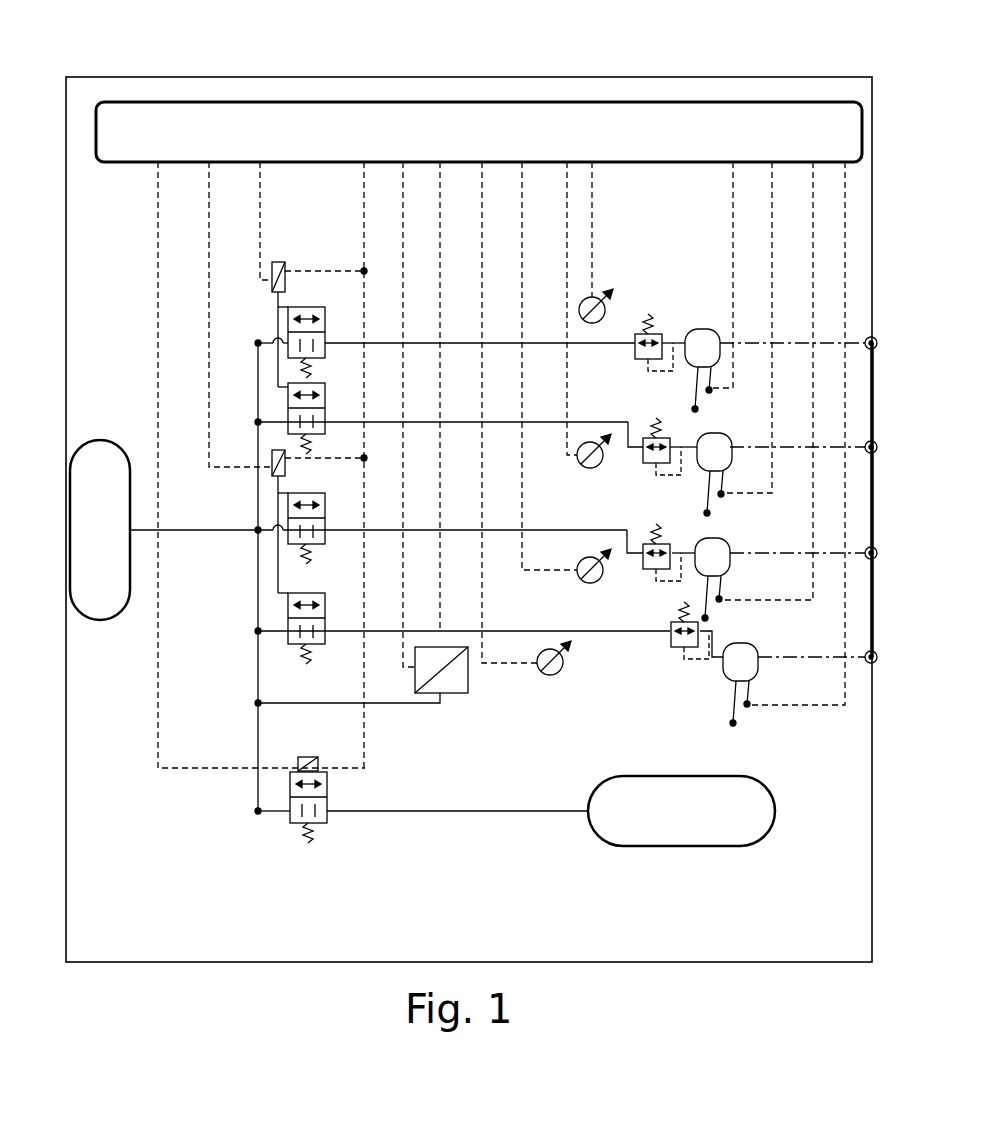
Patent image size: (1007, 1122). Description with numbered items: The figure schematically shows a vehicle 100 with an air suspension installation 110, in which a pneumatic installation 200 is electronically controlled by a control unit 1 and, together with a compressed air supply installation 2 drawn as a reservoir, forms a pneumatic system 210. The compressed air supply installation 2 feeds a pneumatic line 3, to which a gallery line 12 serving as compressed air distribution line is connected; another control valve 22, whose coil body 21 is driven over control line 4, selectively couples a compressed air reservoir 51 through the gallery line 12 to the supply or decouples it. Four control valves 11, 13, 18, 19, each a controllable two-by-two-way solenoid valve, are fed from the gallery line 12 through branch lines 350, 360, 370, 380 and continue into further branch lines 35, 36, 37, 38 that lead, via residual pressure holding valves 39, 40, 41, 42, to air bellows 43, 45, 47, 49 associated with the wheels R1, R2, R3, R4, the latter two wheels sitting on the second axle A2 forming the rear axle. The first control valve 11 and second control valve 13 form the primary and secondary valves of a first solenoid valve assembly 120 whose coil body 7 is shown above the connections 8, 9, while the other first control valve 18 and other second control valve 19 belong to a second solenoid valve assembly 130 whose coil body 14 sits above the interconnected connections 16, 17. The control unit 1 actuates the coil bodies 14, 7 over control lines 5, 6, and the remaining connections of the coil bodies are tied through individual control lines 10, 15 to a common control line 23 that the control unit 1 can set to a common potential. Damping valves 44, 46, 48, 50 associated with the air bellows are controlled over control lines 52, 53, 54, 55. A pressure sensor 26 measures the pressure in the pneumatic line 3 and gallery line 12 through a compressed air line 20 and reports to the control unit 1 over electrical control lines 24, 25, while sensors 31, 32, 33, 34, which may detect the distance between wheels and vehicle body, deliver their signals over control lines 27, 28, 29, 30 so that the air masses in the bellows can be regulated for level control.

The vehicle 100 is at (566, 75).
The air suspension installation 110 is at (706, 102).
The control unit 1 is at (122, 162).
The compressed air supply installation 2 is at (93, 620).
The pneumatic line 3 is at (188, 533).
The control line 4 is at (158, 218).
The control line 5 is at (210, 218).
The control line 6 is at (260, 194).
The coil body 7 is at (278, 261).
The connection 8 is at (277, 308).
The connection 9 is at (294, 306).
The individual control line 10 is at (328, 269).
The first control valve 11 is at (327, 337).
The gallery line 12 is at (257, 394).
The second control valve 13 is at (324, 402).
The coil body 14 is at (270, 457).
The individual control line 15 is at (364, 458).
The connection 16 is at (284, 493).
The connection 17 is at (277, 510).
The other first control valve 18 is at (325, 518).
The other second control valve 19 is at (311, 592).
The compressed air line 20 is at (307, 703).
The coil body 21 is at (300, 757).
The other control valve 22 is at (327, 808).
The common control line 23 is at (363, 208).
The electrical control line 24 is at (403, 235).
The electrical control line 25 is at (440, 263).
The pressure sensor 26 is at (470, 688).
The control line 27 is at (482, 254).
The control line 28 is at (522, 254).
The control line 29 is at (566, 252).
The control line 30 is at (593, 192).
The sensor 31 is at (612, 293).
The sensor 32 is at (585, 467).
The sensor 33 is at (598, 583).
The sensor 34 is at (552, 677).
The branch line 35 is at (607, 342).
The branch line 36 is at (575, 420).
The branch line 37 is at (569, 528).
The branch line 38 is at (587, 633).
The residual pressure holding valve 39 is at (643, 360).
The residual pressure holding valve 40 is at (650, 464).
The residual pressure holding valve 41 is at (653, 570).
The residual pressure holding valve 42 is at (679, 649).
The air bellows 43 is at (705, 328).
The damping valve 44 is at (700, 409).
The air bellows 45 is at (700, 440).
The damping valve 46 is at (708, 511).
The air bellows 47 is at (729, 563).
The damping valve 48 is at (708, 618).
The air bellows 49 is at (760, 670).
The damping valve 50 is at (737, 722).
The compressed air reservoir 51 is at (775, 798).
The control line 52 is at (733, 218).
The control line 53 is at (771, 277).
The control line 54 is at (812, 277).
The control line 55 is at (845, 277).
The first solenoid valve assembly 120 is at (272, 302).
The second solenoid valve assembly 130 is at (251, 587).
The pneumatic installation 200 is at (351, 853).
The pneumatic system 210 is at (212, 851).
The branch line 350 is at (258, 342).
The branch line 360 is at (270, 422).
The branch line 370 is at (257, 529).
The branch line 380 is at (267, 634).
The wheel R1 is at (862, 342).
The wheel R2 is at (862, 446).
The wheel R3 is at (863, 551).
The wheel R4 is at (867, 656).
The second axle A2 is at (870, 377).